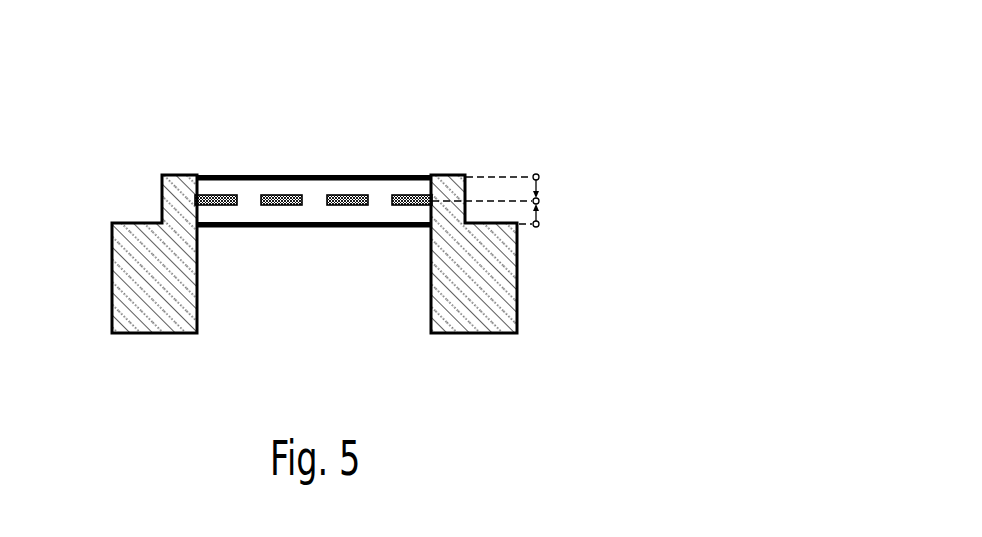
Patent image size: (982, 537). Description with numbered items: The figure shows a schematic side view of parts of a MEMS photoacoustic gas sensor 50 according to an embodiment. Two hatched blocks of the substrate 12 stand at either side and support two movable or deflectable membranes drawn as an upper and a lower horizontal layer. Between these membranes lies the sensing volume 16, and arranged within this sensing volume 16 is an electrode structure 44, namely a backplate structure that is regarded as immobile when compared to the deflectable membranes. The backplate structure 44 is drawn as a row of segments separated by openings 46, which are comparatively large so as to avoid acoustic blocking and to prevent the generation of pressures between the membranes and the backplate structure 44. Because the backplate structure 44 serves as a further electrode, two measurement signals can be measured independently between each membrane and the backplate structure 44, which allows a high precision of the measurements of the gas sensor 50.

The MEMS photoacoustic gas sensor 50 is at (652, 38).
The substrate 12 is at (115, 311).
The sensing volume 16 is at (223, 206).
The electrode structure 44 is at (278, 206).
The openings 46 is at (251, 196).